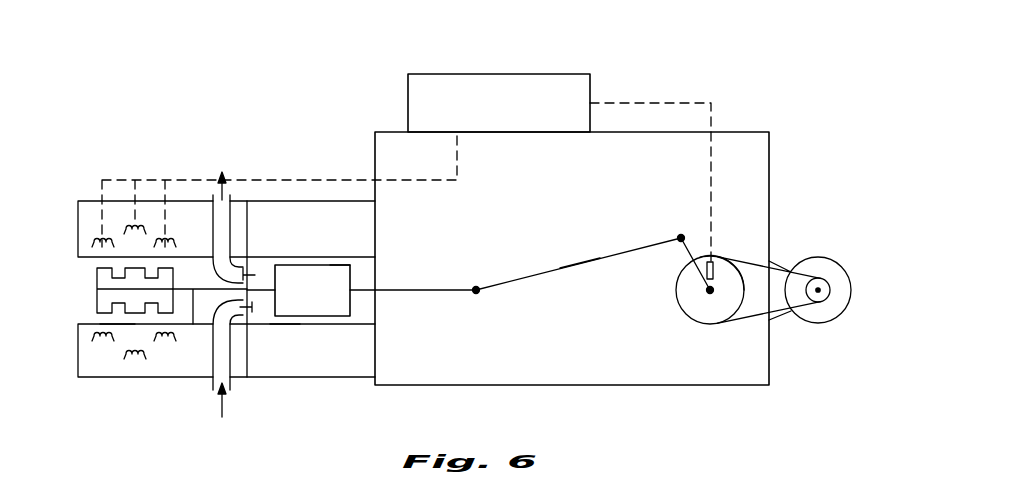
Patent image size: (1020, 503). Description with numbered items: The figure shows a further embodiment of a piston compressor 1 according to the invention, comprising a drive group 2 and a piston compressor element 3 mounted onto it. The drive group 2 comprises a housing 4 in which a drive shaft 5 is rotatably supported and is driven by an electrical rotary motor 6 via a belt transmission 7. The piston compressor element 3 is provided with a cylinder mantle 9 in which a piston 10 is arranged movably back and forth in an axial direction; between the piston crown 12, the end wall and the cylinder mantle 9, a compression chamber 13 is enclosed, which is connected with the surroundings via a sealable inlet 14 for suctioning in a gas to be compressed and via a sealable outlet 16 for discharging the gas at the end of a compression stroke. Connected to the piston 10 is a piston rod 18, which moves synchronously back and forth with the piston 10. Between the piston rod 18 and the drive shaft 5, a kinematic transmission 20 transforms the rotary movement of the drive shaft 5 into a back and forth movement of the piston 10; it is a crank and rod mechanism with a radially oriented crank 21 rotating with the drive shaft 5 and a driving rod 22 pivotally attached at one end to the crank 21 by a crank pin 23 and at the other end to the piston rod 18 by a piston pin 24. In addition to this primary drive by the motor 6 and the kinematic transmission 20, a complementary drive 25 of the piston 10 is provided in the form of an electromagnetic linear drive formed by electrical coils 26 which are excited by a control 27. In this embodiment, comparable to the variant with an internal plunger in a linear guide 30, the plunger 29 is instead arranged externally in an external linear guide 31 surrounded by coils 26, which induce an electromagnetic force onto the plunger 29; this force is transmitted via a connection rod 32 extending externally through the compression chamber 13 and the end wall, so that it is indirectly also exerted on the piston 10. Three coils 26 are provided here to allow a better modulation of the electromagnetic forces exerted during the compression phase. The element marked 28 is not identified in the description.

The piston compressor 1 is at (845, 96).
The drive group 2 is at (775, 187).
The piston compressor element 3 is at (89, 218).
The housing 4 is at (769, 367).
The drive shaft 5 is at (723, 260).
The electrical rotary motor 6 is at (835, 310).
The belt transmission 7 is at (753, 318).
The cylinder mantle 9 is at (282, 325).
The piston 10 is at (340, 265).
The piston crown 12 is at (97, 302).
The compression chamber 13 is at (268, 310).
The sealable inlet 14 is at (217, 380).
The sealable outlet 16 is at (227, 197).
The piston rod 18 is at (443, 290).
The kinematic transmission 20 is at (662, 292).
The crank 21 is at (682, 245).
The driving rod 22 is at (621, 250).
The crank pin 23 is at (677, 283).
The piston pin 24 is at (476, 290).
The complementary drive 25 is at (124, 158).
The electrical coils 26 is at (135, 363).
The control 27 is at (432, 88).
The crank slot 28 is at (710, 290).
The plunger 29 is at (97, 280).
The linear guide 30 is at (317, 265).
The external linear guide 31 is at (117, 325).
The connection rod 32 is at (193, 292).